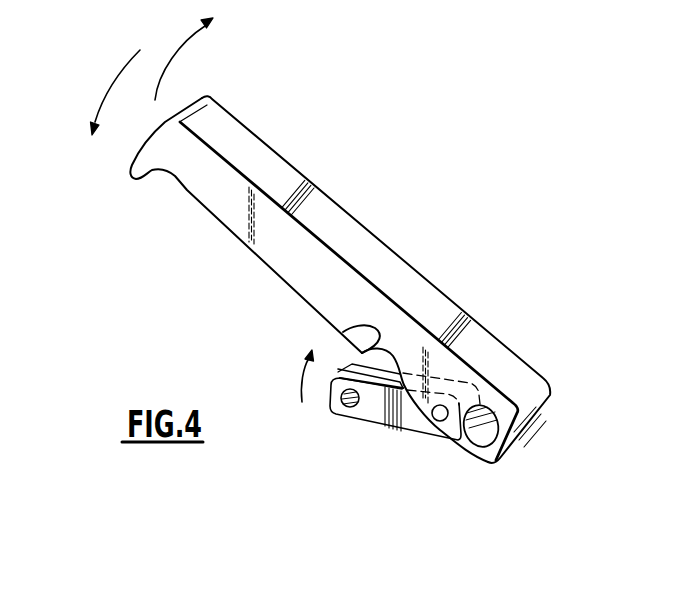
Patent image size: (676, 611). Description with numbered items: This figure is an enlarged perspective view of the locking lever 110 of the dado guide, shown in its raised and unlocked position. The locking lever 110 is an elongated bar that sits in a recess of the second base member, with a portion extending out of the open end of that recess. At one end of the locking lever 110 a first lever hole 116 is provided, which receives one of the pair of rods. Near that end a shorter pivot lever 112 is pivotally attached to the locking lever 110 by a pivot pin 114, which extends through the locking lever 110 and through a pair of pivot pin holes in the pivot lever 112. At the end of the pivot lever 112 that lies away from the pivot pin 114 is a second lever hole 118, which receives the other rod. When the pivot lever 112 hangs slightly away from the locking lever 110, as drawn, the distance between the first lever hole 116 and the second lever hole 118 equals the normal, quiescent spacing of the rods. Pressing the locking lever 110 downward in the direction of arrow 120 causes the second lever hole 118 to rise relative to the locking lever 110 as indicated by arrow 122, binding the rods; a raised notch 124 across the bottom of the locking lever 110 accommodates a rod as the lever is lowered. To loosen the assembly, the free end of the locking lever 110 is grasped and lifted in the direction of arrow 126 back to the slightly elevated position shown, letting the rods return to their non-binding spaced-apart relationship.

The locking lever 110 is at (393, 278).
The pivot lever 112 is at (380, 420).
The pivot pin 114 is at (440, 422).
The first lever hole 116 is at (487, 433).
The second lever hole 118 is at (346, 408).
The arrow 120 is at (113, 72).
The arrow 122 is at (300, 383).
The raised notch 124 is at (343, 332).
The arrow 126 is at (173, 53).